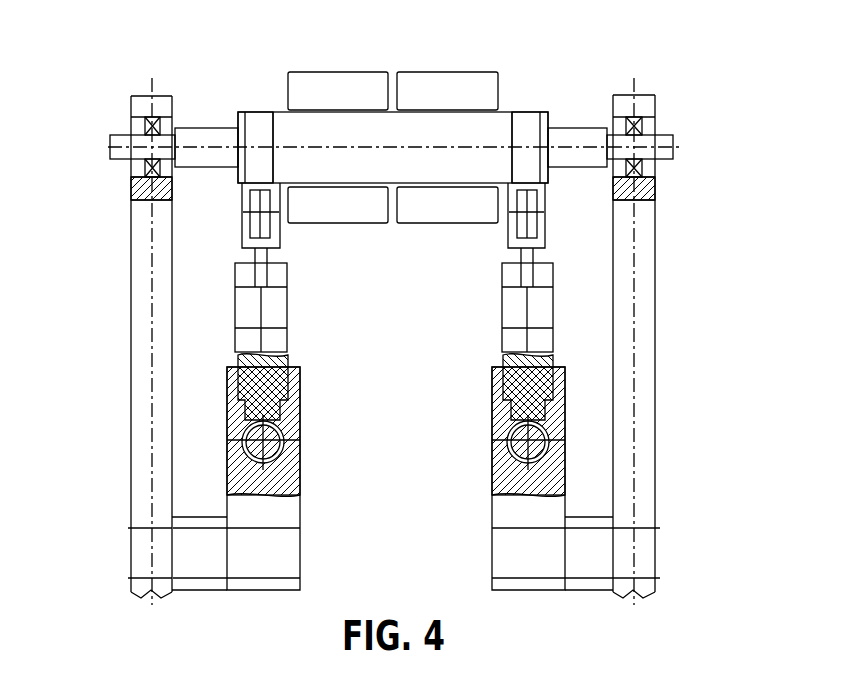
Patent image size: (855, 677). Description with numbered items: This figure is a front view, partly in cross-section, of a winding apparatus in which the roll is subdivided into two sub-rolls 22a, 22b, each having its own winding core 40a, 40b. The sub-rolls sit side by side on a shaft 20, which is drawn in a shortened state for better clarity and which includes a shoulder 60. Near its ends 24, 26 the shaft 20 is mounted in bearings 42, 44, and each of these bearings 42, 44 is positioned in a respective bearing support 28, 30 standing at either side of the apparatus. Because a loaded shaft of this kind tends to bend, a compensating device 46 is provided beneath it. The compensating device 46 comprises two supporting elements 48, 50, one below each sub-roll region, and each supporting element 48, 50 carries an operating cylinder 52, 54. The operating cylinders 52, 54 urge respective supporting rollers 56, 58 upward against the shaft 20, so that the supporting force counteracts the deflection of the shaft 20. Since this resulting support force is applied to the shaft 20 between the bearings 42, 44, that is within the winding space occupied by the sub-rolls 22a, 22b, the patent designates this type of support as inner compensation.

The shaft 20 is at (197, 126).
The sub-roll 22a is at (320, 71).
The sub-roll 22b is at (447, 71).
The end of shaft 24 is at (112, 162).
The end of shaft 26 is at (668, 160).
The bearing support 28 is at (131, 290).
The bearing support 30 is at (656, 358).
The winding core 40a is at (286, 110).
The winding core 40b is at (506, 110).
The bearing 42 is at (130, 127).
The bearing 44 is at (652, 128).
The compensating device 46 is at (292, 320).
The supporting element 48 is at (293, 353).
The supporting element 50 is at (503, 353).
The operating cylinder 52 is at (290, 280).
The operating cylinder 54 is at (498, 280).
The supporting roller 56 is at (260, 212).
The supporting roller 58 is at (528, 208).
The shoulder 60 is at (233, 118).